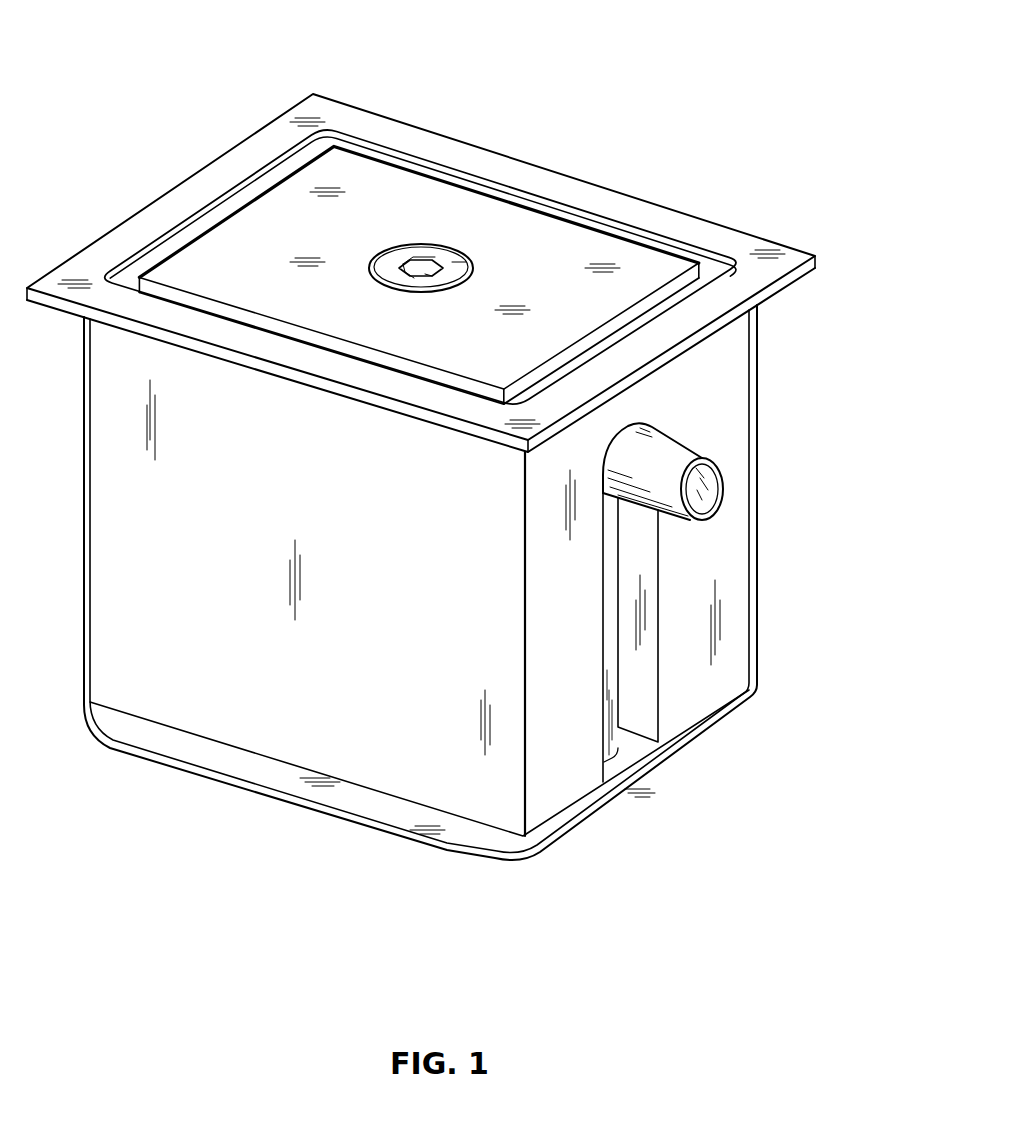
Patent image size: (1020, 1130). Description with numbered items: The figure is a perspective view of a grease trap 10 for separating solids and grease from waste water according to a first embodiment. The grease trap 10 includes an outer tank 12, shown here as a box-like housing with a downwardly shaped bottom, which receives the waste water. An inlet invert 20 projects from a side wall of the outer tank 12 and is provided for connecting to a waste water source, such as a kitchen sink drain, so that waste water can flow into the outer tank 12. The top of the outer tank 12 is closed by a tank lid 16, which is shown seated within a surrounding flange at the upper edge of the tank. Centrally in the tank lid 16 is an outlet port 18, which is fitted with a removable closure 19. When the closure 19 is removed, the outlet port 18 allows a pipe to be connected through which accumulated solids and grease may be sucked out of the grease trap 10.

The grease trap 10 is at (461, 478).
The outer tank 12 is at (757, 592).
The tank lid 16 is at (677, 210).
The outlet port 18 is at (480, 262).
The removable closure 19 is at (430, 253).
The inlet invert 20 is at (722, 466).